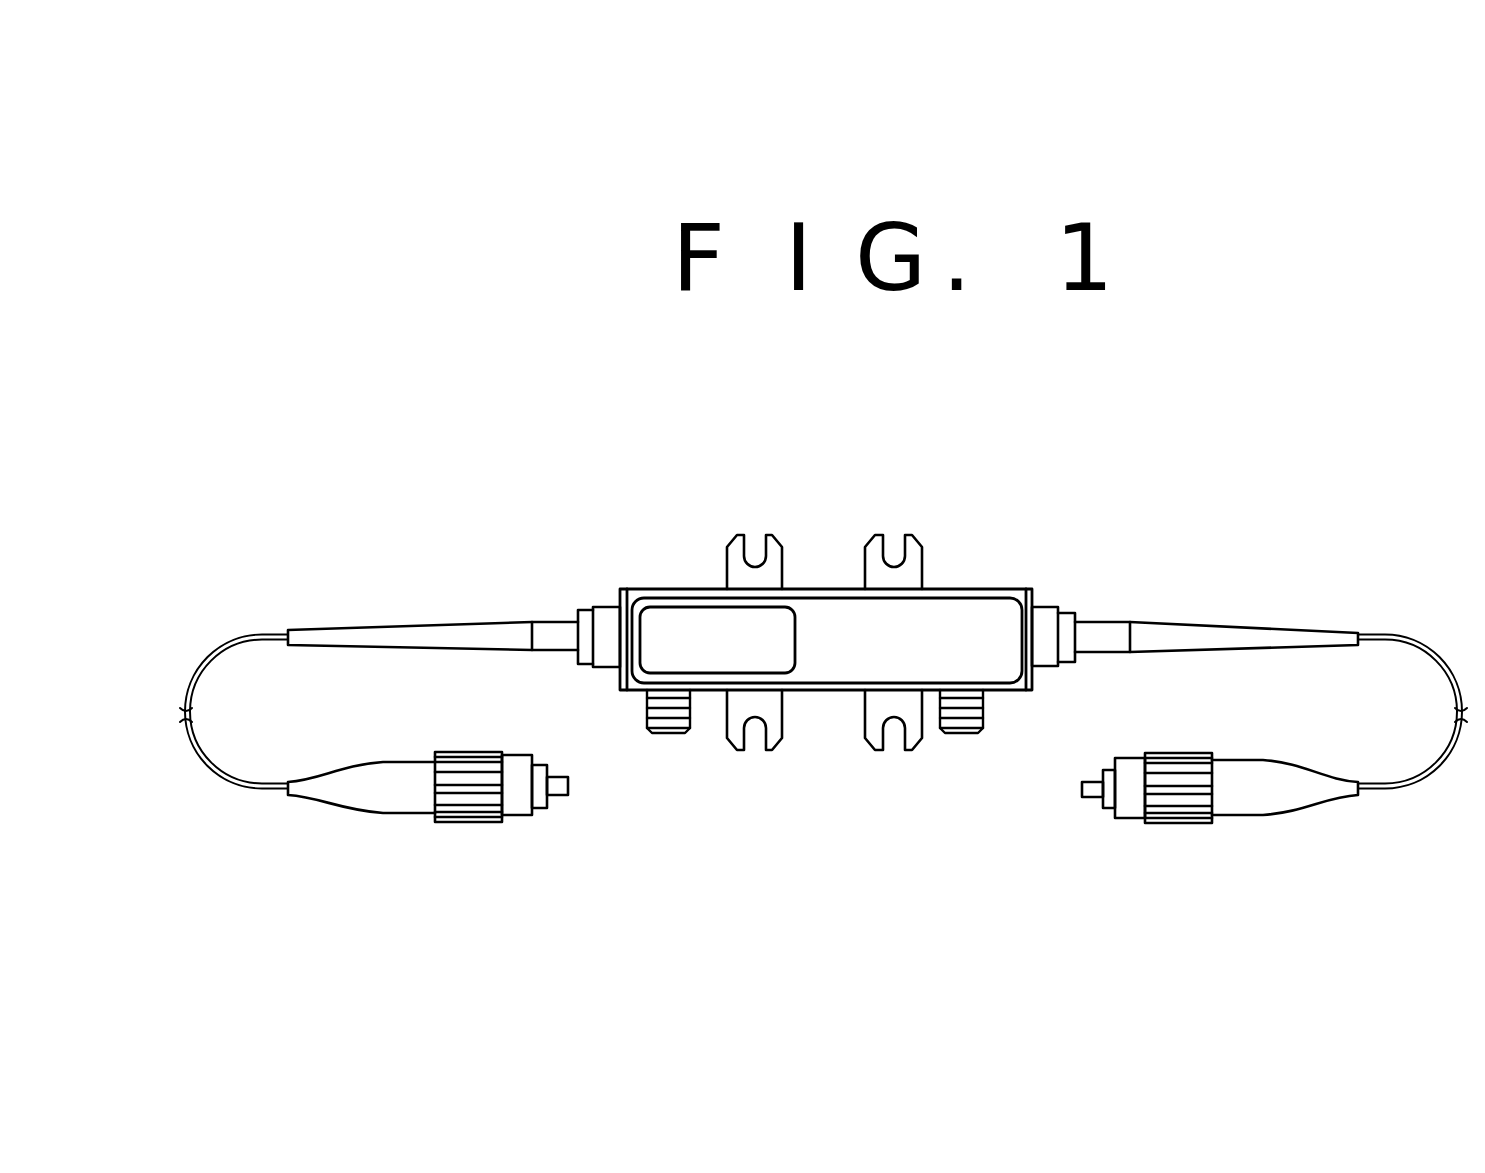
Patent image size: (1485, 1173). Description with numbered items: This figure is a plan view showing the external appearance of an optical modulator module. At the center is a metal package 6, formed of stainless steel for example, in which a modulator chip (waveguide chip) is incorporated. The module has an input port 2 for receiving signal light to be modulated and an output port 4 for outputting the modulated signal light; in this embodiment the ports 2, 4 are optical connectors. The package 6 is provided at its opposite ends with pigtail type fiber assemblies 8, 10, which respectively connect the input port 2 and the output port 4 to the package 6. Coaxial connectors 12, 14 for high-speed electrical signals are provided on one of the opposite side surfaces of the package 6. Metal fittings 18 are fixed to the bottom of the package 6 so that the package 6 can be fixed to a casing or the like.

The input port 2 is at (557, 790).
The output port 4 is at (1090, 790).
The metal package 6 is at (1027, 588).
The pigtail type fiber assembly 8 is at (605, 612).
The pigtail type fiber assembly 10 is at (1058, 614).
The coaxial connector 12 is at (666, 735).
The coaxial connector 14 is at (962, 735).
The metal fittings 18 is at (758, 568).